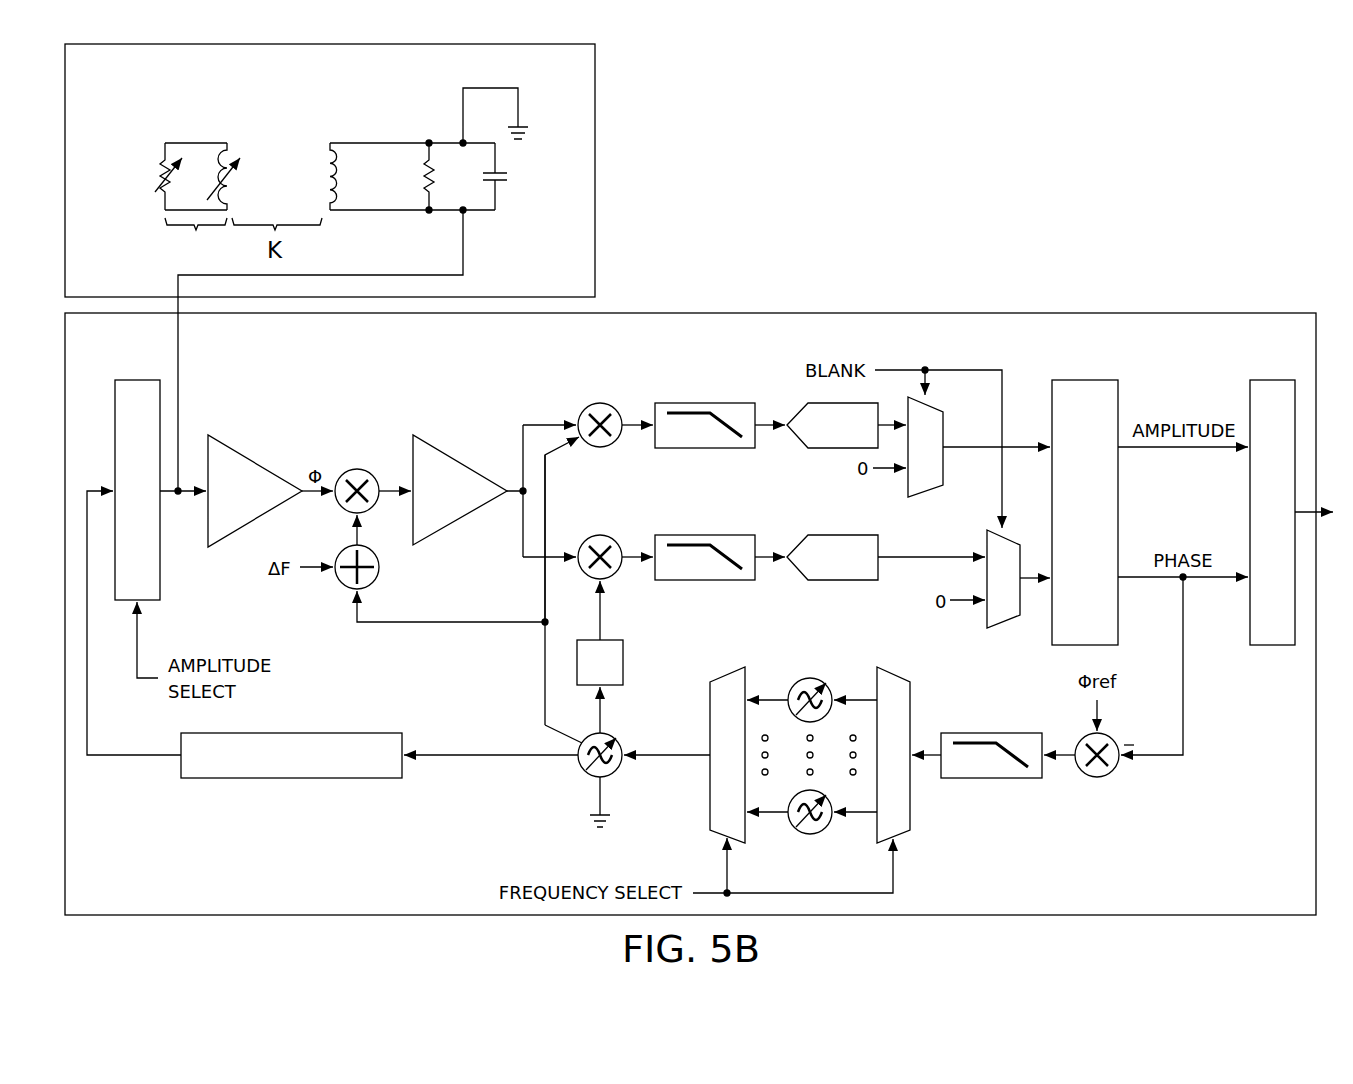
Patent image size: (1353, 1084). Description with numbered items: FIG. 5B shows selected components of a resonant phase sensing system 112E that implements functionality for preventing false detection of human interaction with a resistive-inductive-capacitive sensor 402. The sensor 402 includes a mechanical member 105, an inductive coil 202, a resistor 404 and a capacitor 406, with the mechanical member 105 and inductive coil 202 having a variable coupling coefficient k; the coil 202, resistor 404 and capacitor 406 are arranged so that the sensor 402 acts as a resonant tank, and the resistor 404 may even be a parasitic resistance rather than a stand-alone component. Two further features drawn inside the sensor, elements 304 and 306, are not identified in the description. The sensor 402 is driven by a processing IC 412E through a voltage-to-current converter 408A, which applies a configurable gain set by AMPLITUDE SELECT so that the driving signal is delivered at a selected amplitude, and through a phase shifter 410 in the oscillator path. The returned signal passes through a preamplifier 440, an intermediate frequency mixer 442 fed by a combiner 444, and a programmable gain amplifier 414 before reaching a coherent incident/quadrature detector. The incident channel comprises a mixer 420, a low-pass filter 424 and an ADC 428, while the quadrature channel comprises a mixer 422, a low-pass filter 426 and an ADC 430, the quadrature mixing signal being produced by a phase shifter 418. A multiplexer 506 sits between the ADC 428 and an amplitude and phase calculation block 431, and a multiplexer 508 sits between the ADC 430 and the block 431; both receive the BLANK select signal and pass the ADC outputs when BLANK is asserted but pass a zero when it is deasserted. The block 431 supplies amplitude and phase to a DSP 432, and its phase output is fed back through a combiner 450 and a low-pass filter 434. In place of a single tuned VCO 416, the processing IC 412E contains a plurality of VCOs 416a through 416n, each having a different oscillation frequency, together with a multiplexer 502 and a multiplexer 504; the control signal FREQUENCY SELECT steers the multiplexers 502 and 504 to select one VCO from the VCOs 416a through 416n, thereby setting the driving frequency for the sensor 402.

The resistive-inductive-capacitive sensor 402 is at (598, 130).
The variable resistor 304 is at (158, 173).
The inductive coil 202 is at (320, 168).
The variable coupling 306 is at (228, 187).
The mechanical member 105 is at (196, 240).
The resistor 404 is at (427, 176).
The capacitor 406 is at (508, 178).
The resonant phase sensing system 112E is at (1040, 165).
The processing IC 412E is at (865, 313).
The voltage-to-current converter 408A is at (126, 380).
The preamplifier 440 is at (257, 459).
The intermediate frequency mixer 442 is at (365, 468).
The combiner 444 is at (343, 588).
The programmable gain amplifier 414 is at (462, 460).
The mixer 420 is at (608, 450).
The mixer 422 is at (615, 583).
The low-pass filter 424 is at (702, 450).
The low-pass filter 426 is at (702, 582).
The analog-to-digital converter 428 is at (823, 450).
The analog-to-digital converter 430 is at (840, 581).
The multiplexer 506 is at (933, 490).
The multiplexer 508 is at (1008, 630).
The amplitude and phase calculation block 431 is at (1087, 378).
The DSP 432 is at (1275, 378).
The combiner 450 is at (1115, 773).
The low-pass filter 434 is at (993, 780).
The multiplexer 504 is at (912, 712).
The multiplexer 502 is at (707, 710).
The VCO 416a is at (797, 678).
The VCO 416n is at (822, 833).
The voltage-controlled oscillator 416 is at (620, 778).
The phase shifter 418 is at (625, 663).
The phase shifter 410 is at (290, 780).